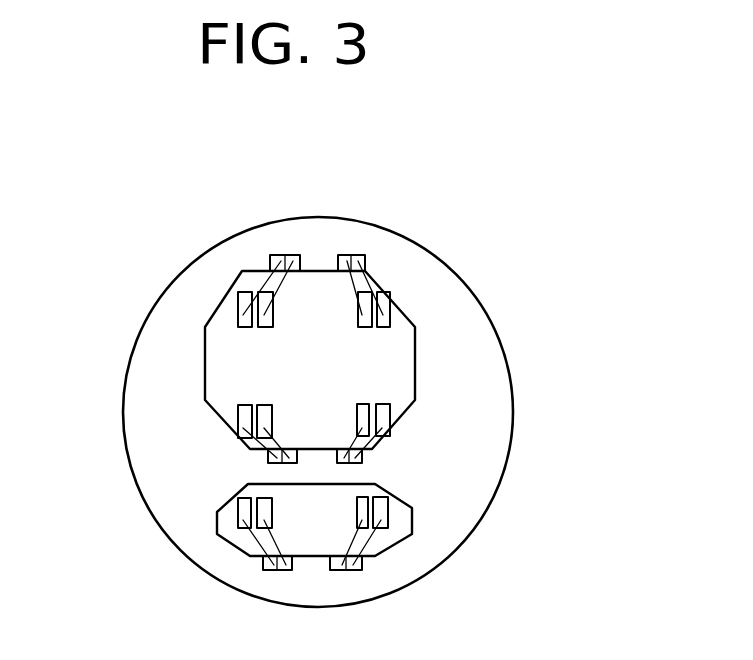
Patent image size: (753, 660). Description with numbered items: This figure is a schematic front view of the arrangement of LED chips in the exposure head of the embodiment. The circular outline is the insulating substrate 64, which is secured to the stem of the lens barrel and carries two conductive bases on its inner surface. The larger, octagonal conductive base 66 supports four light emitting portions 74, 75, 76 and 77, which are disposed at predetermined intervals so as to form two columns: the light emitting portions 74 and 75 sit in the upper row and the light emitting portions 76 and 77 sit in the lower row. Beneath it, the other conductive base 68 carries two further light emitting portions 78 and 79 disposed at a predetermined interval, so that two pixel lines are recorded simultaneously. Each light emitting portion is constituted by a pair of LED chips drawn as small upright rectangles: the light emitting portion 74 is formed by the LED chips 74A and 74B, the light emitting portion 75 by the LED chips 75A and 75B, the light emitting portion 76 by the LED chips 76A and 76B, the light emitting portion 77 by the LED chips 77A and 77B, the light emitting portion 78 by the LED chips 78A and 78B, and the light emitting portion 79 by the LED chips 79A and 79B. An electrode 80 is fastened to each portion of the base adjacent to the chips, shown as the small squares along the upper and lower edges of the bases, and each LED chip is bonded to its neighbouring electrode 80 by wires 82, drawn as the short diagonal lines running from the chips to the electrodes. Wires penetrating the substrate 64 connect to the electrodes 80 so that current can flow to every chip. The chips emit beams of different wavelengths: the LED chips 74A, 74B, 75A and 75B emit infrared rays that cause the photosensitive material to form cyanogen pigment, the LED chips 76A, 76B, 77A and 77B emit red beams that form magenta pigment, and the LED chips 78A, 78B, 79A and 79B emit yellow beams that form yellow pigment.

The insulating substrate 64 is at (478, 300).
The conductive base 66 is at (416, 352).
The conductive base 68 is at (407, 500).
The light emitting portion 74 is at (207, 238).
The LED chip 74A is at (238, 297).
The LED chip 74B is at (260, 293).
The light emitting portion 75 is at (427, 260).
The LED chip 75A is at (363, 328).
The LED chip 75B is at (385, 294).
The light emitting portion 76 is at (149, 413).
The LED chip 76A is at (238, 418).
The LED chip 76B is at (256, 441).
The light emitting portion 77 is at (470, 423).
The LED chip 77A is at (360, 403).
The LED chip 77B is at (390, 403).
The light emitting portion 78 is at (157, 555).
The LED chip 78A is at (240, 512).
The LED chip 78B is at (260, 532).
The light emitting portion 79 is at (456, 530).
The LED chip 79A is at (362, 530).
The LED chip 79B is at (390, 520).
The electrode 80 is at (280, 254).
The wire 82 is at (376, 290).